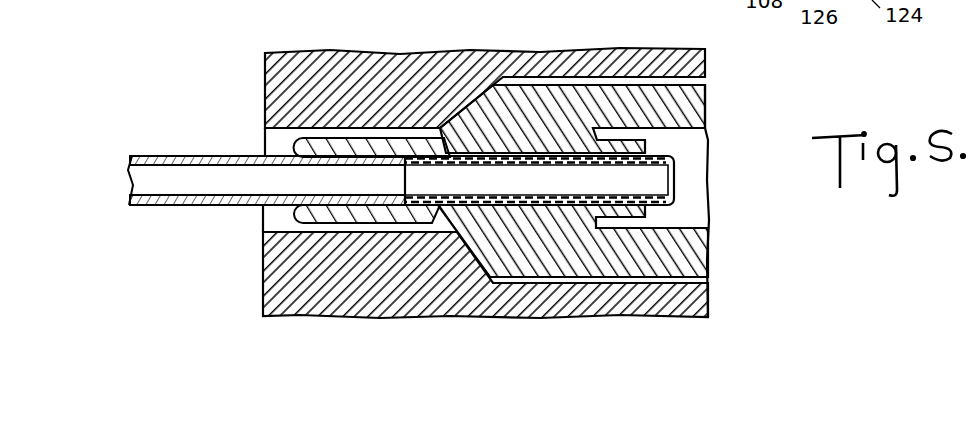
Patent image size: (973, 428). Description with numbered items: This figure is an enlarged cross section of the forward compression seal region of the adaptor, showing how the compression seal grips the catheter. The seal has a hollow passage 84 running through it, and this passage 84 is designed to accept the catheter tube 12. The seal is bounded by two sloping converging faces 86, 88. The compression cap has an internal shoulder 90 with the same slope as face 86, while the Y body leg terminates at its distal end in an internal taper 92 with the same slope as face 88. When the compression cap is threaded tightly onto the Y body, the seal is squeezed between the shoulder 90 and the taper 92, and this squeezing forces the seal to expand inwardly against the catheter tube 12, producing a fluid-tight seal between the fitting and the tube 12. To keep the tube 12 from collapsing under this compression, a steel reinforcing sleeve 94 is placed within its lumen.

The catheter tube 12 is at (177, 155).
The hollow passage 84 is at (520, 150).
The sloping converging face 86 is at (430, 222).
The sloping converging face 88 is at (543, 270).
The internal shoulder 90 is at (485, 100).
The internal taper 92 is at (548, 123).
The steel reinforcing sleeve 94 is at (403, 178).